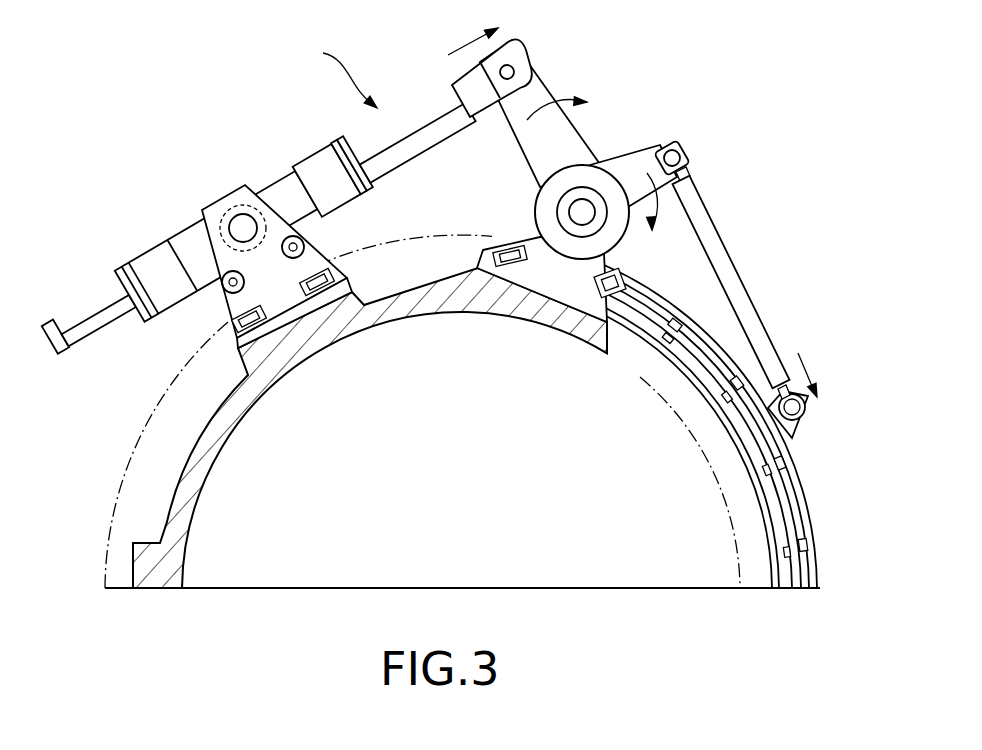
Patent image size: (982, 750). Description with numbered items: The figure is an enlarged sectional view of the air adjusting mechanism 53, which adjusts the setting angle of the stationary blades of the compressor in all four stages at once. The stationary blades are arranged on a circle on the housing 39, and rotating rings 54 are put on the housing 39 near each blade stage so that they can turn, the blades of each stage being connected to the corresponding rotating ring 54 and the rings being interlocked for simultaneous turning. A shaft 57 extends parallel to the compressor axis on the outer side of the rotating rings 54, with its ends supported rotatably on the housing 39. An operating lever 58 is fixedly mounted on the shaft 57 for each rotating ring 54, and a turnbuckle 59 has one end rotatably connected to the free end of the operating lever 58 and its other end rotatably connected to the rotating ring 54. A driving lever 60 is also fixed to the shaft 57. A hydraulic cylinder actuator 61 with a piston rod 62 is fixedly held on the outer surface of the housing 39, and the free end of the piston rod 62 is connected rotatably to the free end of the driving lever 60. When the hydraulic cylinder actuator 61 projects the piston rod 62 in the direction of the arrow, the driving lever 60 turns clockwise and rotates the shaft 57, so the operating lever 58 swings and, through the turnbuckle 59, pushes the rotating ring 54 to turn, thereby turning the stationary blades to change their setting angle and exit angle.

The housing 39 is at (243, 428).
The air adjusting mechanism 53 is at (257, 200).
The rotating rings 54 is at (802, 475).
The shaft 57 is at (580, 203).
The operating lever 58 is at (627, 157).
The turnbuckle 59 is at (723, 238).
The driving lever 60 is at (528, 153).
The hydraulic cylinder actuator 61 is at (193, 248).
The piston rod 62 is at (423, 120).